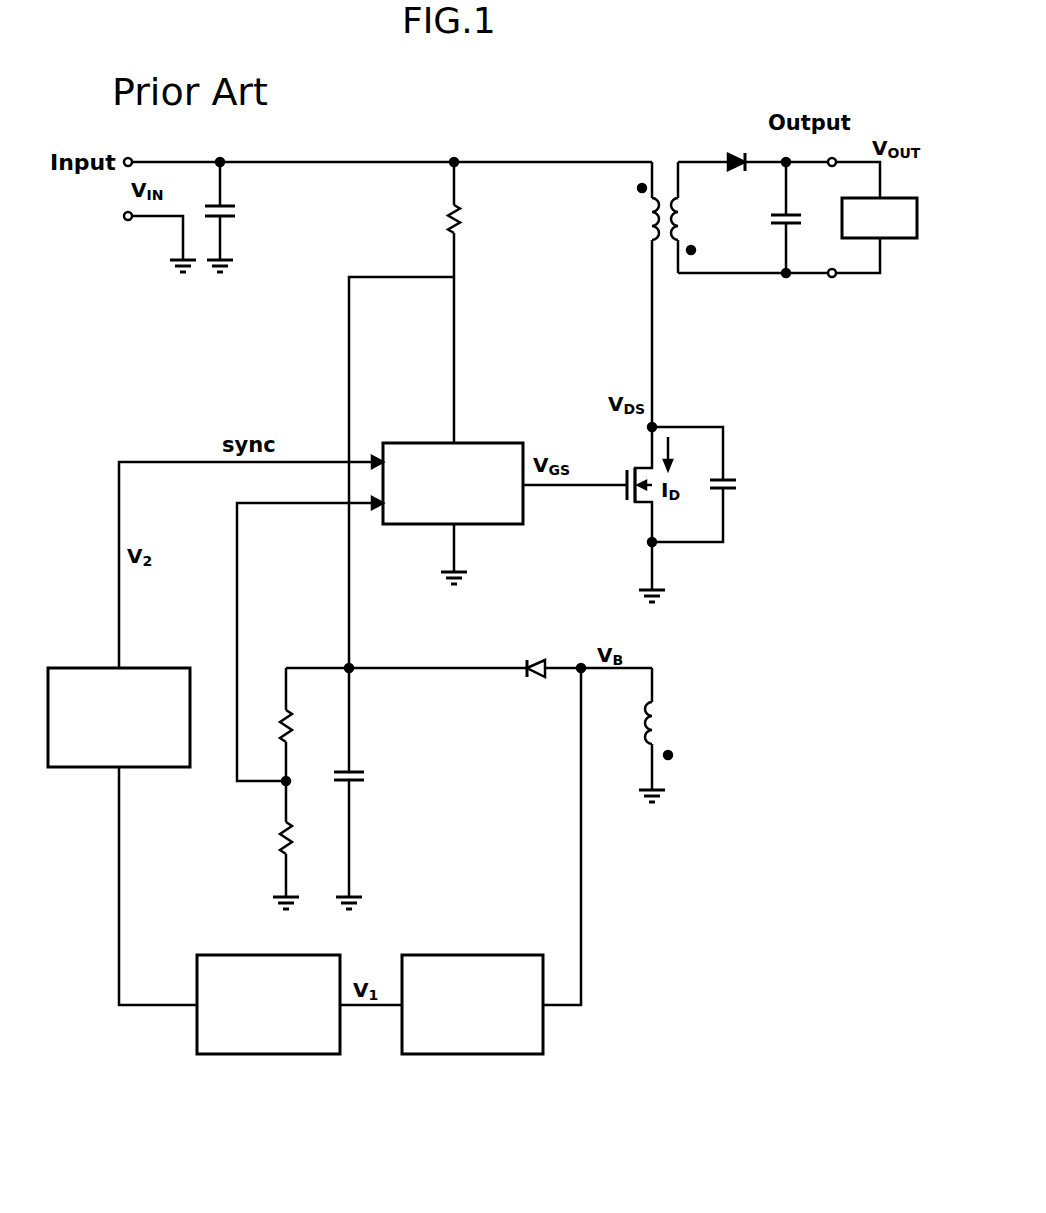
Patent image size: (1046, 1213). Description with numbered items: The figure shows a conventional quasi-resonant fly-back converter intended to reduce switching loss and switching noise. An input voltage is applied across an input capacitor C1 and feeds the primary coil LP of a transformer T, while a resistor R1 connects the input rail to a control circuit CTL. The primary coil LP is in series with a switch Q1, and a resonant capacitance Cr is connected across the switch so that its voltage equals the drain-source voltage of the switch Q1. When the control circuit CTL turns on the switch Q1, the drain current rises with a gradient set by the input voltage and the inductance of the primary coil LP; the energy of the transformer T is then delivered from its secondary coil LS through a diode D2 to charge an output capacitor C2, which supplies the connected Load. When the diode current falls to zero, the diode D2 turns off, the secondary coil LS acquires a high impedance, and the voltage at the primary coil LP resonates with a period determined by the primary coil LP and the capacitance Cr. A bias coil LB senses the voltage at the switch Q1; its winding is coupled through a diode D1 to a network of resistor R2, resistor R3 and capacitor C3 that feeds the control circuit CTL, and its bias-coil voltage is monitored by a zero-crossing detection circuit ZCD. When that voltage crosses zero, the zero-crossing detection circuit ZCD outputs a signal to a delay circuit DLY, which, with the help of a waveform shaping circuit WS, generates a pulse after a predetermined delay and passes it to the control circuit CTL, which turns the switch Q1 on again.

The input capacitor C1 is at (238, 217).
The resistor R1 is at (470, 302).
The control circuit CTL is at (454, 501).
The transformer T is at (661, 277).
The primary coil LP is at (634, 294).
The secondary coil LS is at (692, 217).
The diode D2 is at (734, 150).
The capacitor C2 is at (795, 217).
The load Load is at (879, 218).
The switch Q1 is at (637, 512).
The capacitance Cr is at (708, 484).
The waveform shaping circuit WS is at (119, 703).
The resistor R2 is at (301, 724).
The resistor R3 is at (298, 845).
The capacitor C3 is at (359, 788).
The diode D1 is at (532, 655).
The auxiliary coil LB is at (664, 735).
The delay circuit DLY is at (268, 1018).
The zero-crossing detection circuit ZCD is at (472, 1018).